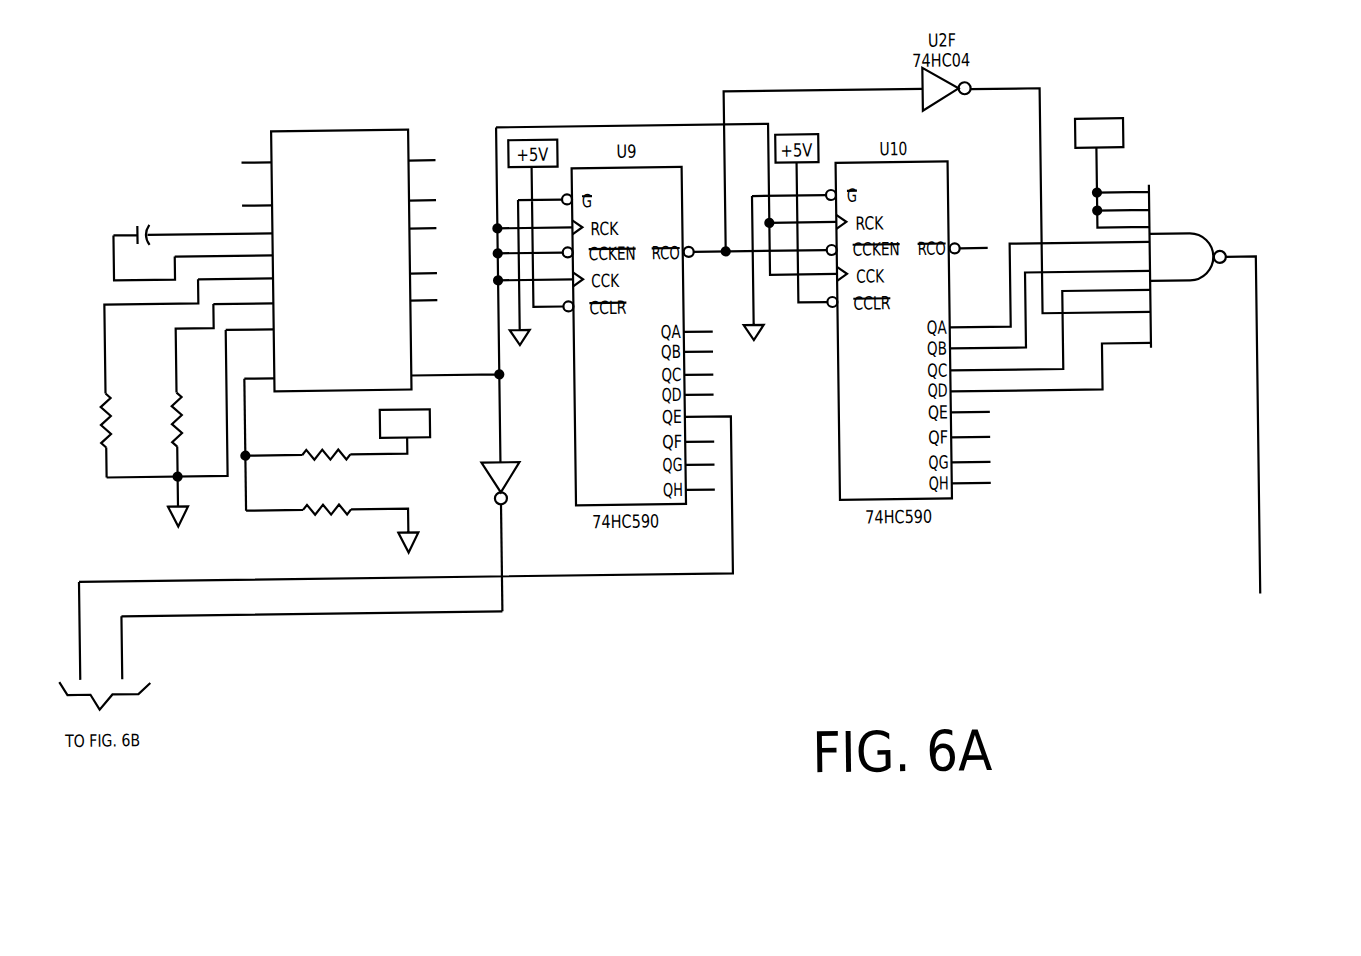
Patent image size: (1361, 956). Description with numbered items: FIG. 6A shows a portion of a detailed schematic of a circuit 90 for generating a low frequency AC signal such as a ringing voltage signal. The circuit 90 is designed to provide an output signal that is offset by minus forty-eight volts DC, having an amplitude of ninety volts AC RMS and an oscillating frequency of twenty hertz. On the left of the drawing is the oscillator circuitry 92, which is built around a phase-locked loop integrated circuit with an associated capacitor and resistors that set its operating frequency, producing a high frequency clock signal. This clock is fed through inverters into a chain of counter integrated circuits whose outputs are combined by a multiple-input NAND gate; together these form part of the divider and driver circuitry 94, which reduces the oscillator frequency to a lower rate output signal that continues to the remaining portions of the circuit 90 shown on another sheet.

The circuit 90 is at (1225, 139).
The oscillator circuitry 92 is at (202, 174).
The divider and driver circuitry 94 is at (1270, 358).